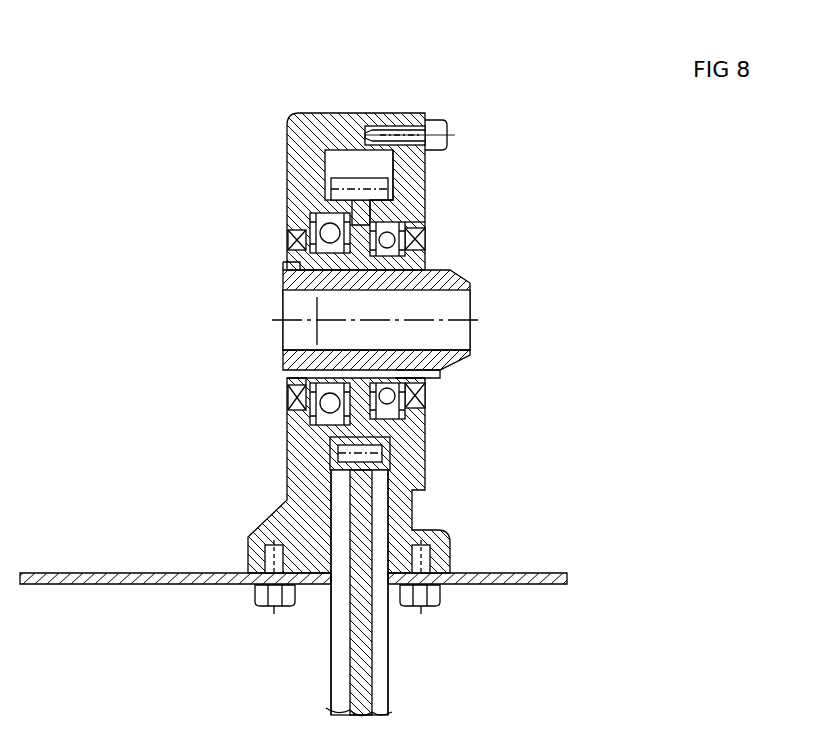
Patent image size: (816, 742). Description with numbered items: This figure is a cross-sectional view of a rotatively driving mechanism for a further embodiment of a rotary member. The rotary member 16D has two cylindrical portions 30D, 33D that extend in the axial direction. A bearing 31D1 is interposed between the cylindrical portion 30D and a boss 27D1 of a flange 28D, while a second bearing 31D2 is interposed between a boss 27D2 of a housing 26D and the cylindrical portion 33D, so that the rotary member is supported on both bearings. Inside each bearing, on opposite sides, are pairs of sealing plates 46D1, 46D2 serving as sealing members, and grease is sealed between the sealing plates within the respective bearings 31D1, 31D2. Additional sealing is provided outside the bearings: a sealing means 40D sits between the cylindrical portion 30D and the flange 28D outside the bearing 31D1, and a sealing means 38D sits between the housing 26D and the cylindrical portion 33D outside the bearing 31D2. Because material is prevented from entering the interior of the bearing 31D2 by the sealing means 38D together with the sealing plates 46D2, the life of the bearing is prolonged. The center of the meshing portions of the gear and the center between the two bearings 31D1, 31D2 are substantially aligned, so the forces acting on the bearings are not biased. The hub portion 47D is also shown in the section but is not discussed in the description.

The housing 26D is at (300, 150).
The boss of flange 27D1 is at (356, 200).
The boss of housing 27D2 is at (345, 200).
The flange 28D is at (420, 182).
The rotary member 16D is at (420, 217).
The cylindrical portion 30D is at (430, 266).
The cylindrical portion 33D is at (287, 260).
The hub 47D is at (310, 364).
The sealing means 38D is at (290, 400).
The sealing plates 46D2 is at (325, 410).
The sealing means 40D is at (420, 385).
The sealing plates 46D1 is at (420, 395).
The bearing 31D1 is at (402, 415).
The bearing 31D2 is at (362, 573).